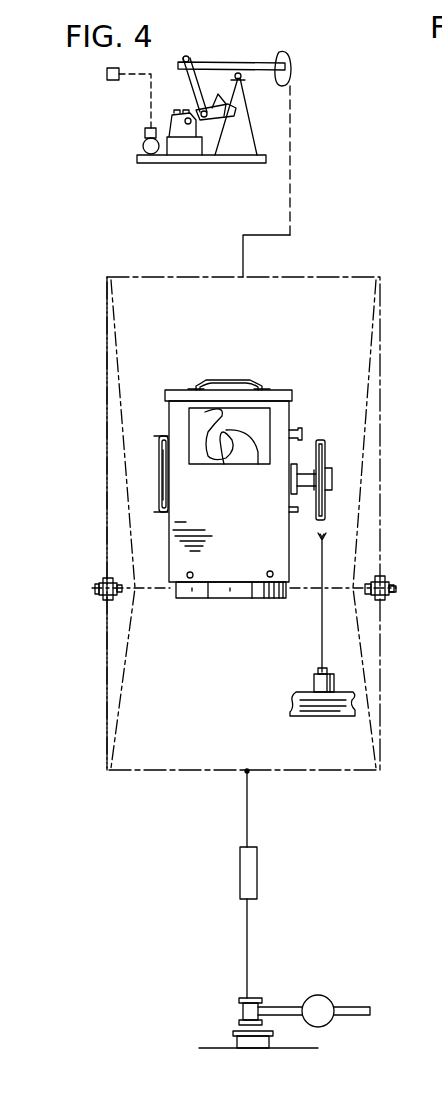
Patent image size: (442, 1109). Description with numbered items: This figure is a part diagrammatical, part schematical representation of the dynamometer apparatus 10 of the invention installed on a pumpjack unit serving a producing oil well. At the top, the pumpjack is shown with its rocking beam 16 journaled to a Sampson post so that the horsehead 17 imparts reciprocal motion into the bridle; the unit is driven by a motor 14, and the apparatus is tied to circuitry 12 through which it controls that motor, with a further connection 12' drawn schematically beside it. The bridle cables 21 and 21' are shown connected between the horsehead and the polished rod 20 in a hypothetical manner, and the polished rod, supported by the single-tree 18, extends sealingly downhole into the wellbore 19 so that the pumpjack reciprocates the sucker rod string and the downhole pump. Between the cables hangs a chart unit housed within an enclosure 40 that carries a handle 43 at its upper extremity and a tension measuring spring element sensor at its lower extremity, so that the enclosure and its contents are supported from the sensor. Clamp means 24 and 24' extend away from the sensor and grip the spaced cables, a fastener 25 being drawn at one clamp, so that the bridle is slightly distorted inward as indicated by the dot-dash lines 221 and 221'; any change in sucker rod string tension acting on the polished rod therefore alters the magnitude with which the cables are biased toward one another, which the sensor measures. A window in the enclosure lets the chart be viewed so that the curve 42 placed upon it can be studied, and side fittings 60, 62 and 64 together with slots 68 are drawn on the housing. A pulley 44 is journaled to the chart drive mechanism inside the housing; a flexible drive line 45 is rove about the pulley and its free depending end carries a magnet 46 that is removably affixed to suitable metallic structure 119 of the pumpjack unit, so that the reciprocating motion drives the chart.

The dynamometer apparatus 10 is at (235, 598).
The circuitry 12 is at (104, 98).
The sensor connection 12' is at (108, 132).
The motor 14 is at (146, 150).
The rocking beam 16 is at (244, 63).
The horsehead 17 is at (291, 62).
The single-tree 18 is at (259, 872).
The wellbore 19 is at (238, 1032).
The polished rod 20 is at (249, 818).
The bridle cable 21 is at (271, 523).
The bridle cable 21' is at (81, 523).
The dot-dash line of distorted bridle 221 is at (397, 524).
The dot-dash line of distorted bridle 221' is at (91, 524).
The clamp means 24 is at (402, 552).
The clamp means 24' is at (90, 559).
The bracket fastener 25 is at (395, 588).
The enclosure 40 is at (223, 478).
The curve 42 is at (250, 430).
The handle 43 is at (228, 378).
The pulley 44 is at (318, 440).
The flexible drive line 45 is at (320, 616).
The magnet 46 is at (314, 680).
The metallic structure 119 is at (292, 699).
The side handle 60 is at (160, 436).
The handle mount 62 is at (157, 436).
The handle grip 64 is at (160, 474).
The ventilation slots 68 is at (224, 445).